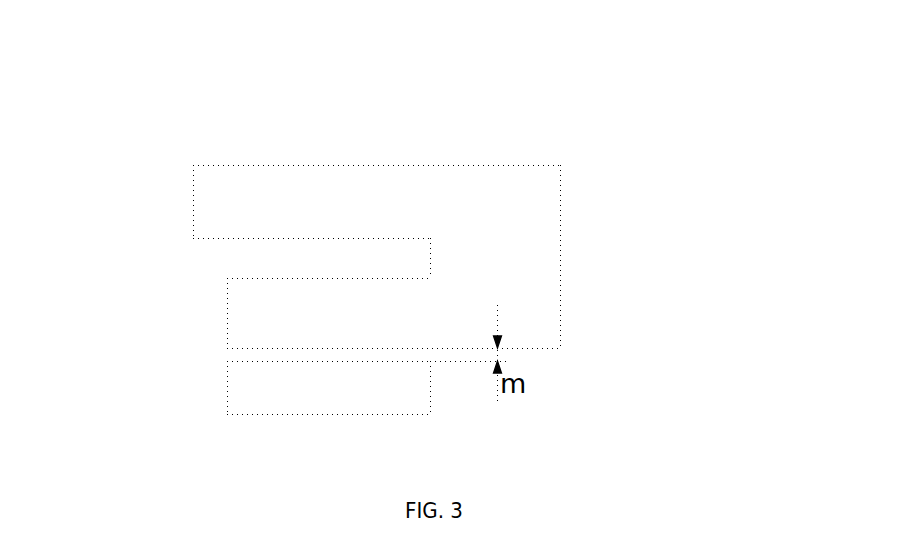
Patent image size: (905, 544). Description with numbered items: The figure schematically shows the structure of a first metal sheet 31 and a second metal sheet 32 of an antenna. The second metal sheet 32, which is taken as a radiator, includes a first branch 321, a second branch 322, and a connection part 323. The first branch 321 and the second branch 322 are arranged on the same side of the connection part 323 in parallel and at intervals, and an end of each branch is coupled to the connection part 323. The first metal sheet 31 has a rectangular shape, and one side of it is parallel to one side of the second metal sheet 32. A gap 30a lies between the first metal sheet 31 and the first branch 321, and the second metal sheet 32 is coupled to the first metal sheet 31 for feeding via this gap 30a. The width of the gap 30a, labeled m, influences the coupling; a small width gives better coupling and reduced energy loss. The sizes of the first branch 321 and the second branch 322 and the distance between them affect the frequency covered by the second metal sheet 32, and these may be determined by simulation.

The second metal sheet 32 is at (434, 187).
The first branch 321 is at (238, 330).
The second branch 322 is at (303, 185).
The connection part 323 is at (530, 238).
The first metal sheet 31 is at (460, 413).
The gap 30a is at (250, 353).